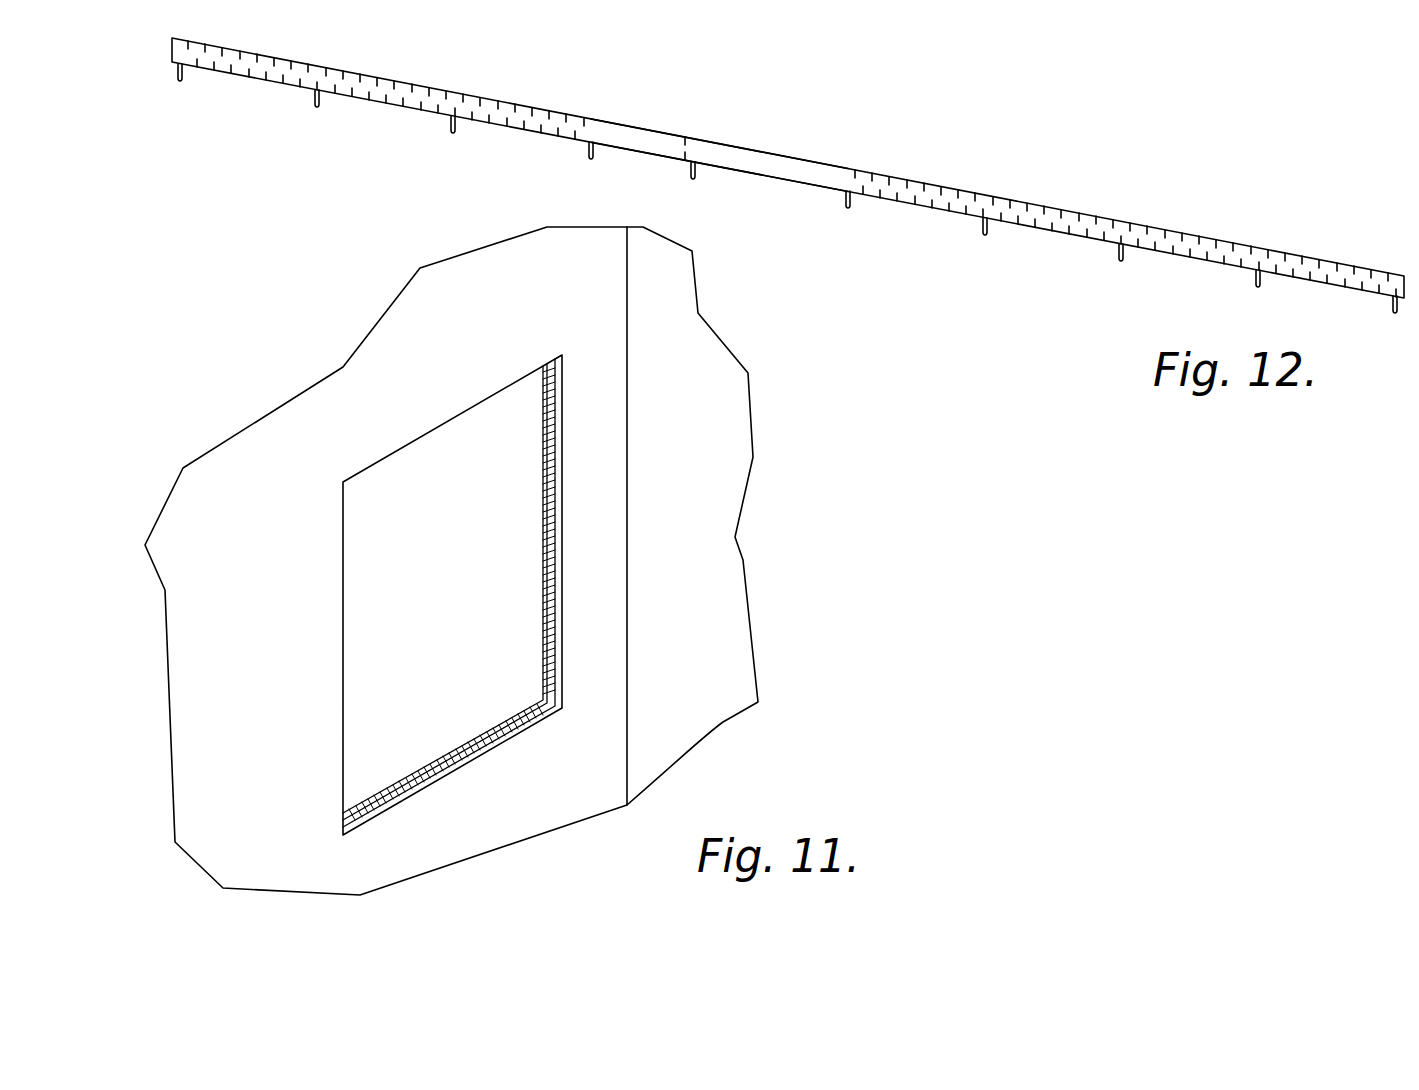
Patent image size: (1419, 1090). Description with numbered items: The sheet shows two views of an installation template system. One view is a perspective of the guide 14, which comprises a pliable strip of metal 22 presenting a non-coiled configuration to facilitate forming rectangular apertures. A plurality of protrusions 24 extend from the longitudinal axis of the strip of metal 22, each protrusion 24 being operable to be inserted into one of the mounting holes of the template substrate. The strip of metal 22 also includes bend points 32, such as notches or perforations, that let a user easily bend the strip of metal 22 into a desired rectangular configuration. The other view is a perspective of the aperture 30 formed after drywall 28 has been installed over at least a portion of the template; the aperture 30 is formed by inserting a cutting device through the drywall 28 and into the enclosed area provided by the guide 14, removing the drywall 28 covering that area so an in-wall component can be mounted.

In FIG. 12, the guide 14 is at (789, 162).
In FIG. 12, the strip of metal 22 is at (627, 132).
In FIG. 12, the protrusions 24 is at (317, 108).
In FIG. 11, the drywall 28 is at (523, 813).
In FIG. 11, the aperture 30 is at (415, 588).
In FIG. 12, the bend points 32 is at (443, 93).